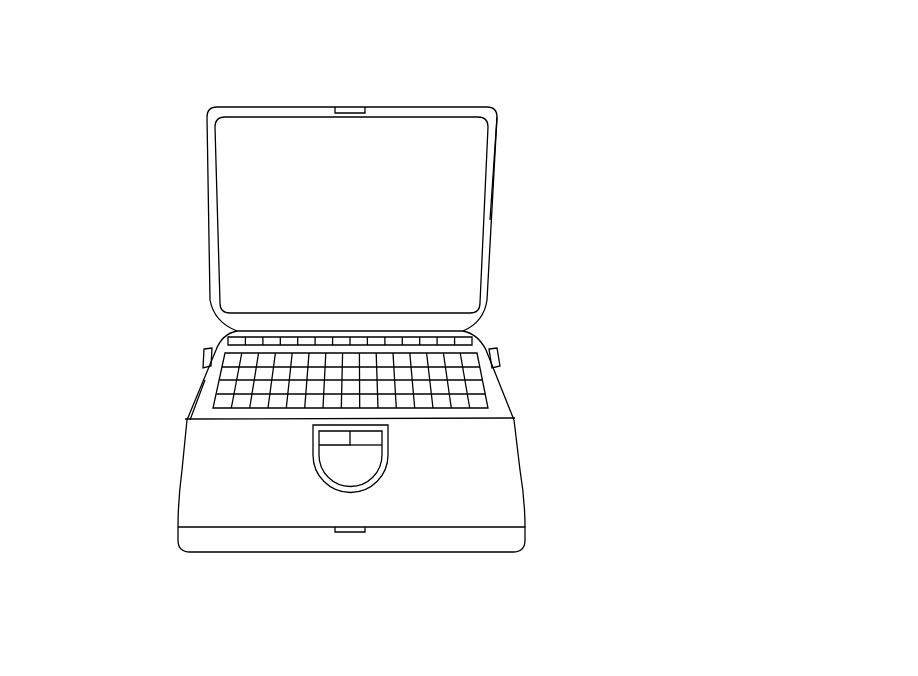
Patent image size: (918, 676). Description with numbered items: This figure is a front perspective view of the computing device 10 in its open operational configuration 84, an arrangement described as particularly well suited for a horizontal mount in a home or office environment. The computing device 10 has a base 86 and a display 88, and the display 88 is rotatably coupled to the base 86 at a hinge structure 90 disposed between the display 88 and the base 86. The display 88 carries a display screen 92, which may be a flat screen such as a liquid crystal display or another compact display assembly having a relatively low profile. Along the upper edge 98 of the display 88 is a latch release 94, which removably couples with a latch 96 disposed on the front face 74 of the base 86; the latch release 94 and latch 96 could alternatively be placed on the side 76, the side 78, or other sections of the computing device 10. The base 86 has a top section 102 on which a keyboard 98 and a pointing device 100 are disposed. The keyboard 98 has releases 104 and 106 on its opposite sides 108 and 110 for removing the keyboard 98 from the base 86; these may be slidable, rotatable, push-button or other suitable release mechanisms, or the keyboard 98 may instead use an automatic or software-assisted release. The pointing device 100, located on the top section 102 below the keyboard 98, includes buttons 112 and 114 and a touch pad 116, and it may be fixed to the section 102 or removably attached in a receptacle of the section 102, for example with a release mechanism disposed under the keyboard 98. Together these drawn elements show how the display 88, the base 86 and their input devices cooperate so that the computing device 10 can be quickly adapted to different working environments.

The computing device 10 is at (470, 36).
The front face 74 is at (262, 552).
The side 76 is at (178, 527).
The side 78 is at (526, 515).
The operational configuration 84 is at (143, 303).
The base 86 is at (524, 549).
The display 88 is at (250, 105).
The hinge structure 90 is at (476, 330).
The display screen 92 is at (475, 145).
The latch release 94 is at (350, 107).
The latch 96 is at (348, 532).
The keyboard 98 is at (470, 107).
The pointing device 100 is at (350, 492).
The top section 102 is at (205, 480).
The release 104 is at (203, 358).
The release 106 is at (498, 358).
The side of keyboard 108 is at (195, 375).
The side of keyboard 110 is at (510, 378).
The button 112 is at (320, 437).
The button 114 is at (385, 438).
The touch pad 116 is at (345, 470).